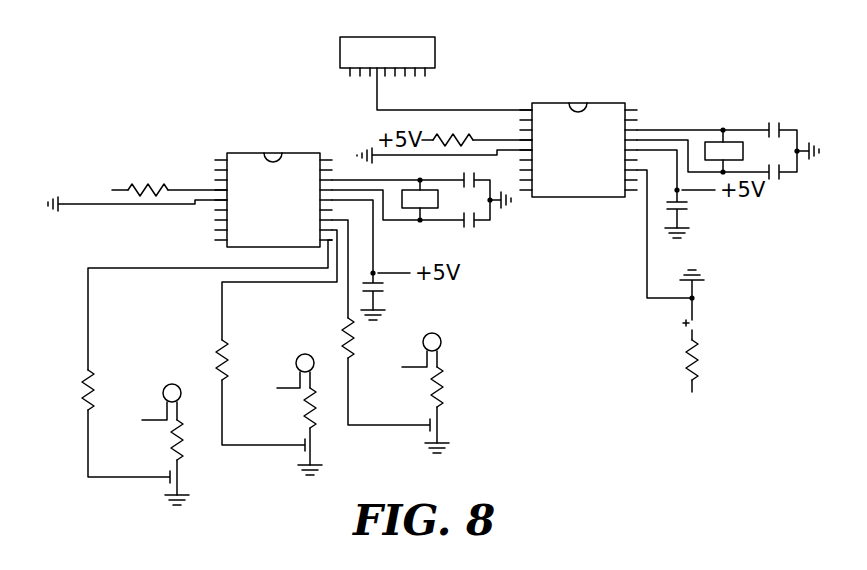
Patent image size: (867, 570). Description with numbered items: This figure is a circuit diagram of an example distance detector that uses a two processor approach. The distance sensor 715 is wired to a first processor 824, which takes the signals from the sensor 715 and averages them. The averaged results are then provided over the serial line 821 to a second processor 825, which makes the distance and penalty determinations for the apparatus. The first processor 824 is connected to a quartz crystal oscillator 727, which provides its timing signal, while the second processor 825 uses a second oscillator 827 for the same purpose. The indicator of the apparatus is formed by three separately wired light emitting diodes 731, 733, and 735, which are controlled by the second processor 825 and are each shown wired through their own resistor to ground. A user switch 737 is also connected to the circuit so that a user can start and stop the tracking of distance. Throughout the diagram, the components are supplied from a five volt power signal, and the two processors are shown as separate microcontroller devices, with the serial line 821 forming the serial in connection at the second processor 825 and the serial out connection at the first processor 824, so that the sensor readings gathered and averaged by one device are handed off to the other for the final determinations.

The distance sensor 715 is at (410, 37).
The quartz crystal oscillator 727 is at (727, 128).
The light emitting diode 731 is at (165, 385).
The light emitting diode 733 is at (297, 355).
The light emitting diode 735 is at (440, 334).
The user switch 737 is at (697, 323).
The serial line 821 is at (110, 246).
The first processor 824 is at (602, 103).
The second processor 825 is at (303, 153).
The second oscillator 827 is at (424, 210).